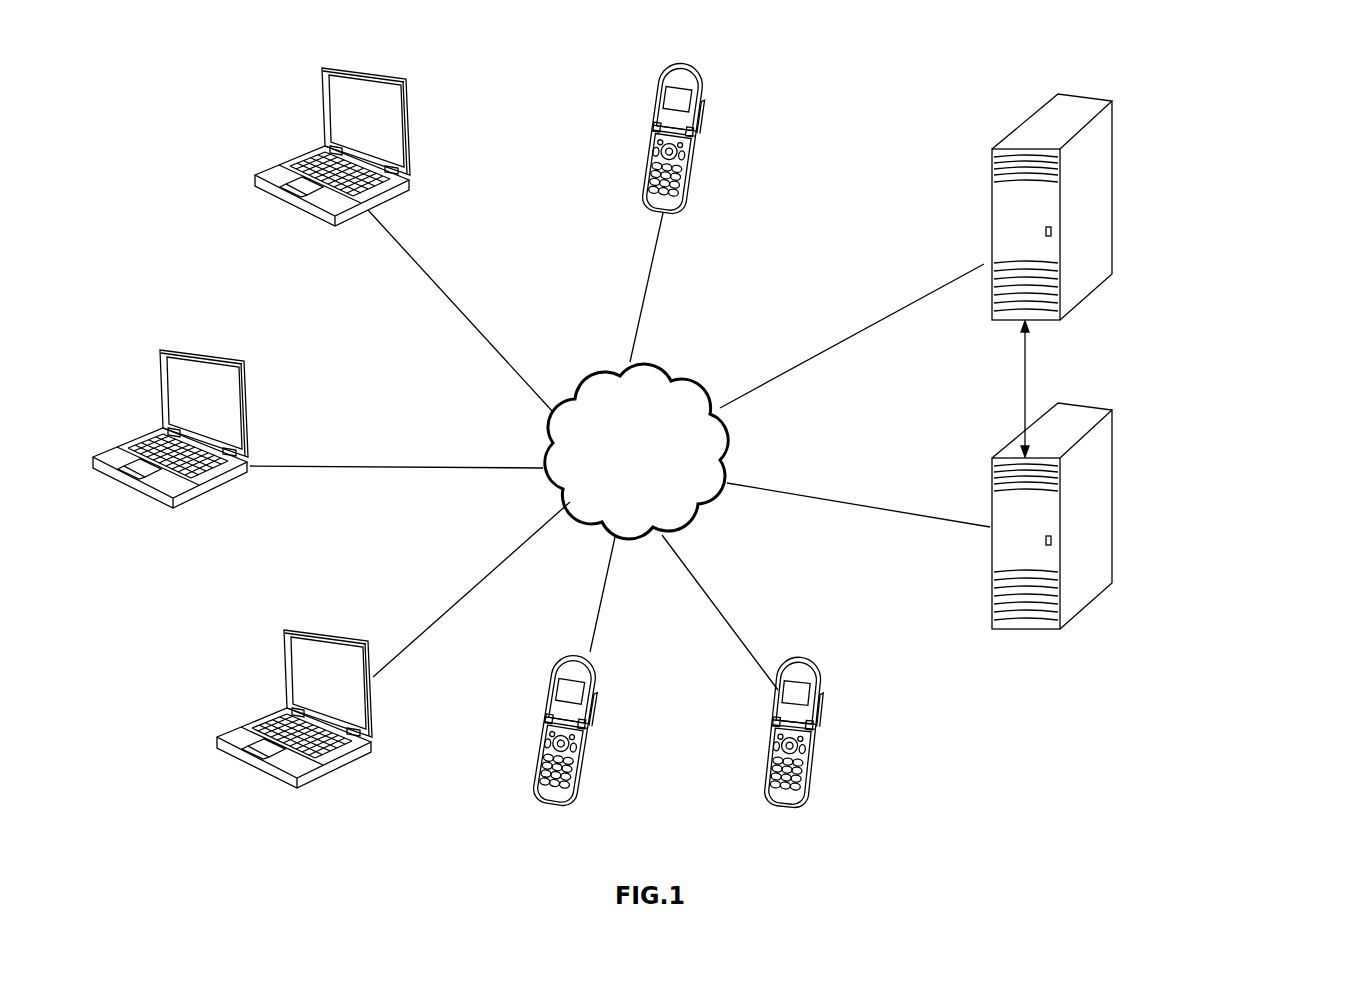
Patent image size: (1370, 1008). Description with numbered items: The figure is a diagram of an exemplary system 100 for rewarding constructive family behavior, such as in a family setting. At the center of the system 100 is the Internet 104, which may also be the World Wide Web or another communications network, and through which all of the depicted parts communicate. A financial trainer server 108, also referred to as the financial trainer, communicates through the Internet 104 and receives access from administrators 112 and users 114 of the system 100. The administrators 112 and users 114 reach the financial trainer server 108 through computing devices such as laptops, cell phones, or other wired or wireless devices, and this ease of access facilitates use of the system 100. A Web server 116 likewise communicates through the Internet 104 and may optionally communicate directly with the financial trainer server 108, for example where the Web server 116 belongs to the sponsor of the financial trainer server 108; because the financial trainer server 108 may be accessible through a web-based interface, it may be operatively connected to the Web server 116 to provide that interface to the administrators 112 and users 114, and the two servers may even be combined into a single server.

The system 100 is at (140, 80).
The Internet 104 is at (645, 492).
The financial trainer server 108 is at (1250, 332).
The administrators 112 is at (413, 138).
The users 114 is at (213, 483).
The Web server 116 is at (1288, 644).